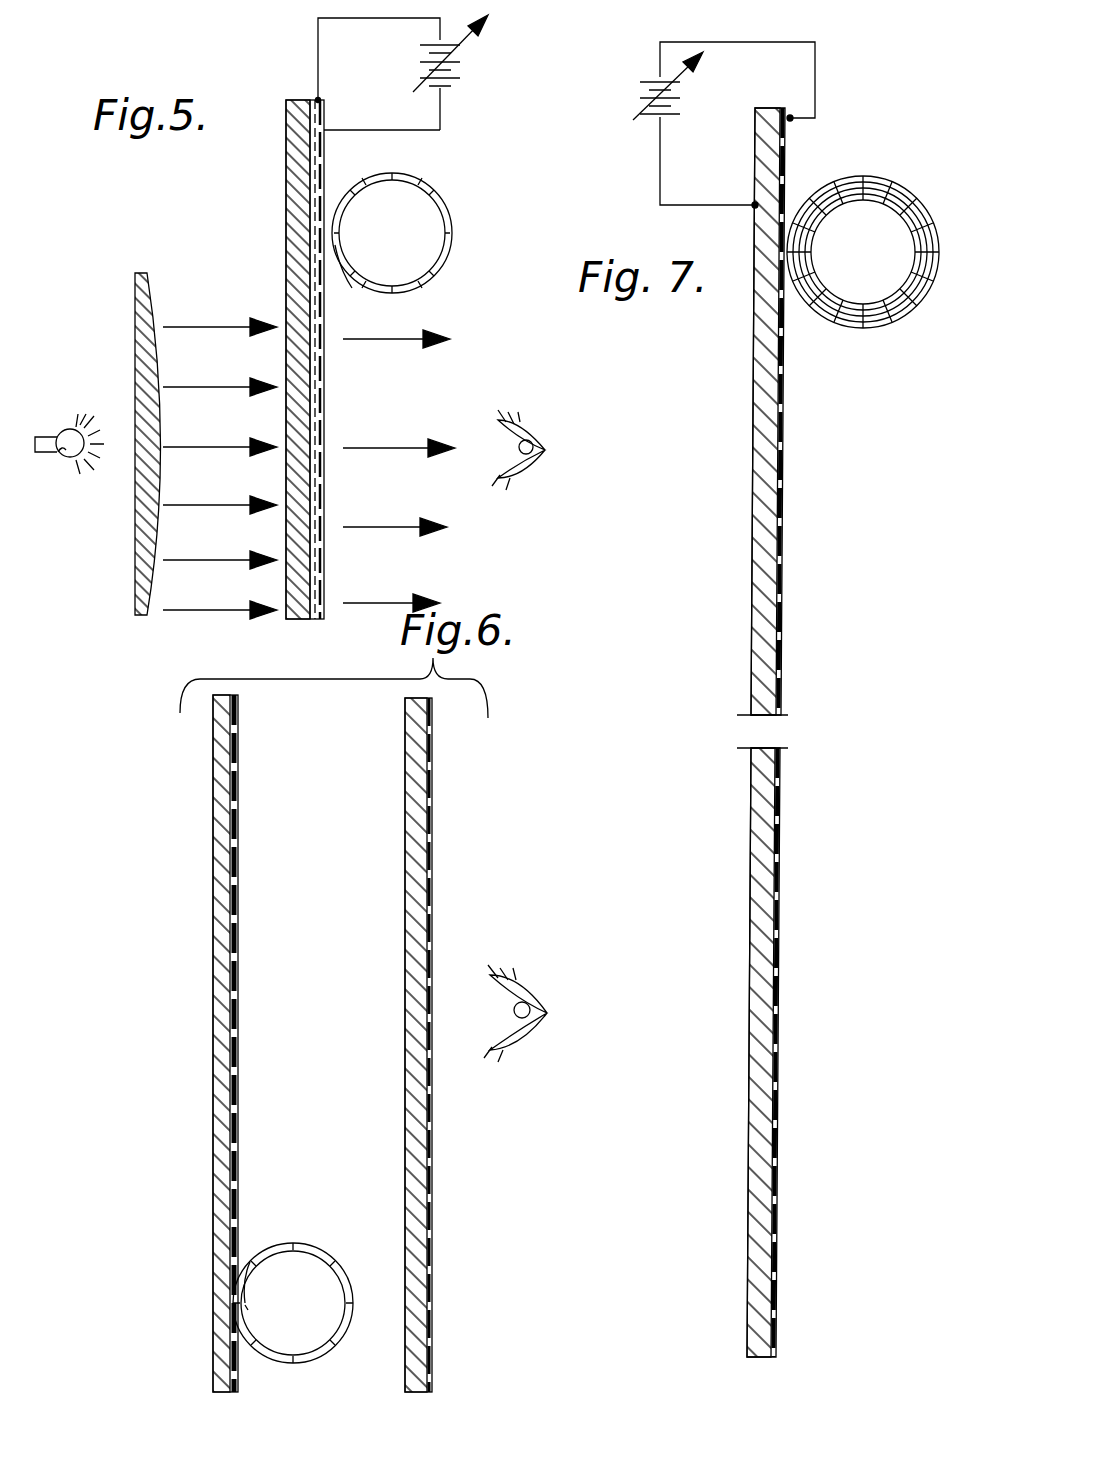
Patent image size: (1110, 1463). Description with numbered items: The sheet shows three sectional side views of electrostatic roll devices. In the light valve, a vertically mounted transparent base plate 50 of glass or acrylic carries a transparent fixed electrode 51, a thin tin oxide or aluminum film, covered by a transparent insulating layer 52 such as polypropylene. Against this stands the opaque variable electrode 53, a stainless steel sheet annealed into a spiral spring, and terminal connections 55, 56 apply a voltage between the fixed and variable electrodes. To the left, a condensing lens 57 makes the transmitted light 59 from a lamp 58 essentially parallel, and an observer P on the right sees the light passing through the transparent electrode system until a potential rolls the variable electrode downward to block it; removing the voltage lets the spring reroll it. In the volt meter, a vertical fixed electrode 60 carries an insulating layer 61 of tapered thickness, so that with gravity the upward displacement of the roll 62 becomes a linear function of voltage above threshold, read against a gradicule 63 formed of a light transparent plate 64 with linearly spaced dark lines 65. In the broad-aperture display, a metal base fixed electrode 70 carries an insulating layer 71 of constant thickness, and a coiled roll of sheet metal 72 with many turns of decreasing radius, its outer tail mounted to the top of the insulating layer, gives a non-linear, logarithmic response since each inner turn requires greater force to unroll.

In FIG. 5, the transparent base plate 50 is at (290, 506).
In FIG. 5, the transparent fixed electrode 51 is at (316, 532).
In FIG. 5, the transparent insulating layer 52 is at (324, 562).
In FIG. 5, the variable electrode 53 is at (452, 233).
In FIG. 5, the terminal connection 55 is at (318, 100).
In FIG. 5, the terminal connection 56 is at (326, 134).
In FIG. 5, the condensing lens 57 is at (136, 590).
In FIG. 5, the lamp 58 is at (64, 456).
In FIG. 5, the transmitted light 59 is at (205, 447).
In FIG. 6, the vertical fixed electrode 60 is at (216, 1026).
In FIG. 6, the insulating layer 61 is at (238, 1016).
In FIG. 6, the roll 62 is at (322, 1254).
In FIG. 6, the gradicule 63 is at (445, 905).
In FIG. 6, the light transparent plate 64 is at (415, 955).
In FIG. 6, the dark lines 65 is at (430, 985).
In FIG. 7, the metal base fixed electrode 70 is at (766, 526).
In FIG. 7, the insulating layer 71 is at (784, 522).
In FIG. 7, the coiled roll of sheet metal 72 is at (886, 322).
In FIG. 5, the observer P is at (536, 438).
In FIG. 6, the observer P is at (532, 1000).